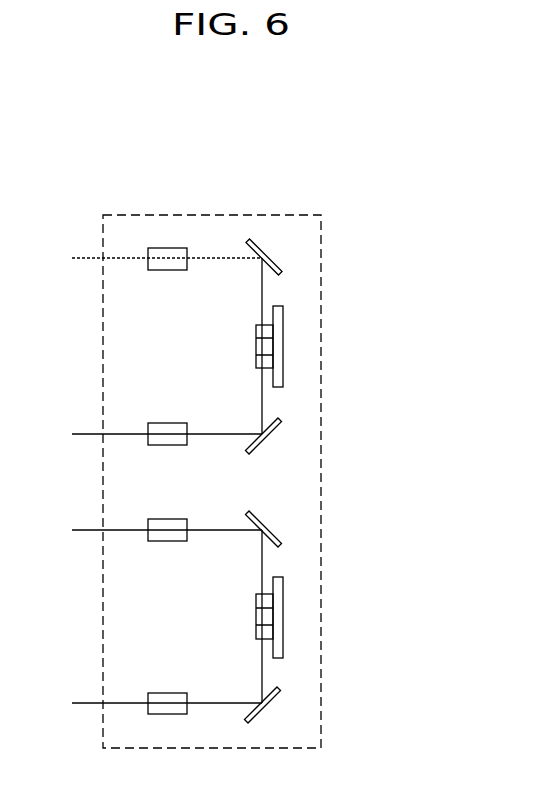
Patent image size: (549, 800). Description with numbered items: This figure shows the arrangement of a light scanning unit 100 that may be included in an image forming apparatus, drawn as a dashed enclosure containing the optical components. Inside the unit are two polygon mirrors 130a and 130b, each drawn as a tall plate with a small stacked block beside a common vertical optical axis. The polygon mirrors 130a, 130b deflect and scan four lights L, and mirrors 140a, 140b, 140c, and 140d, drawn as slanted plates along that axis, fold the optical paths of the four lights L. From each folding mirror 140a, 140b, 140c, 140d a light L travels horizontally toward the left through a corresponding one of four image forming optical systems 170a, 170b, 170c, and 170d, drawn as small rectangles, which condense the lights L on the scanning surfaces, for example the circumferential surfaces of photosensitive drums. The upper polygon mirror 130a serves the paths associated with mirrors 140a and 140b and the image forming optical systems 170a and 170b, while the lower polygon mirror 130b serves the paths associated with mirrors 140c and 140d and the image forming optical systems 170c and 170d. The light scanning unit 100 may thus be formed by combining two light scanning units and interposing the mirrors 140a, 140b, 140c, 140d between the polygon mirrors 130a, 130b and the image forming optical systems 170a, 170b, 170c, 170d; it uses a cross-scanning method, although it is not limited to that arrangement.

The light scanning unit 100 is at (283, 215).
The light L is at (117, 257).
The image forming optical system 170a is at (170, 248).
The image forming optical system 170b is at (168, 423).
The image forming optical system 170c is at (175, 519).
The image forming optical system 170d is at (170, 693).
The mirror 140a is at (270, 256).
The mirror 140b is at (270, 437).
The mirror 140c is at (270, 530).
The mirror 140d is at (268, 705).
The polygon mirror 130a is at (283, 347).
The polygon mirror 130b is at (283, 618).